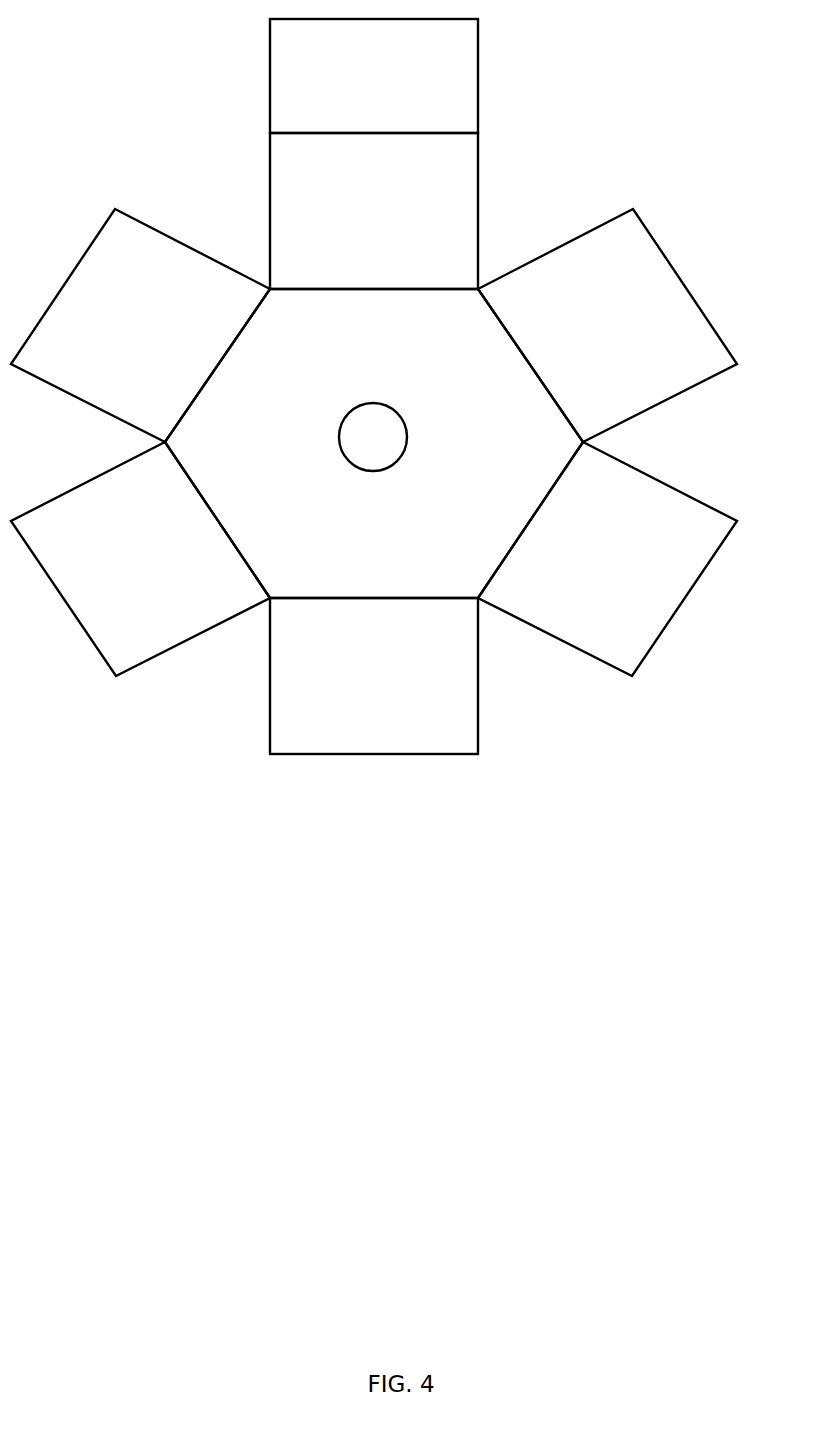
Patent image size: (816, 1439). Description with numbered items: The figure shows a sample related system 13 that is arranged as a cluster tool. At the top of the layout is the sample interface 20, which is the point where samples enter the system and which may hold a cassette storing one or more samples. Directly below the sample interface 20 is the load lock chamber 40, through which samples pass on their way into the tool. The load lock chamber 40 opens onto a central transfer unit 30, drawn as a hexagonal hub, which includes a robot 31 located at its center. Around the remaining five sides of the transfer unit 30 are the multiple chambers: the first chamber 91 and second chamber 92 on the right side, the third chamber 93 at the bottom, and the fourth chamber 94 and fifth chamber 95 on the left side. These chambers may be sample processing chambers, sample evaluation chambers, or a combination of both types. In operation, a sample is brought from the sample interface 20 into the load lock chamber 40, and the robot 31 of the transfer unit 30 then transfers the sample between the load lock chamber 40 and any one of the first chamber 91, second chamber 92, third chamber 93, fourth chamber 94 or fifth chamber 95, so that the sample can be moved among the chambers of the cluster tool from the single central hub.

The sample related system 13 is at (374, 440).
The sample interface 20 is at (374, 76).
The transfer unit 30 is at (374, 443).
The robot 31 is at (428, 414).
The load lock chamber 40 is at (374, 211).
The first chamber 91 is at (607, 325).
The second chamber 92 is at (607, 559).
The third chamber 93 is at (374, 676).
The fourth chamber 94 is at (140, 559).
The fifth chamber 95 is at (140, 325).